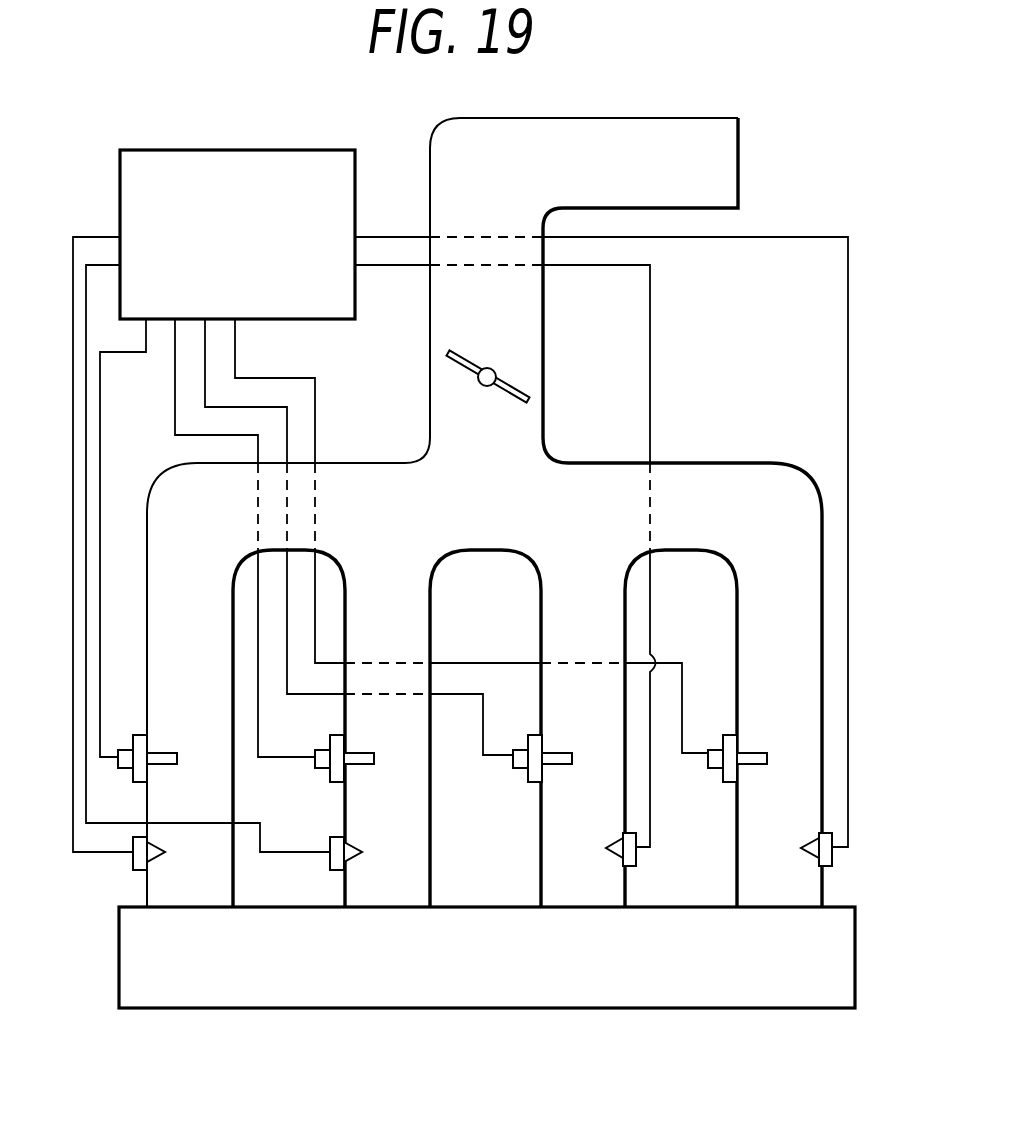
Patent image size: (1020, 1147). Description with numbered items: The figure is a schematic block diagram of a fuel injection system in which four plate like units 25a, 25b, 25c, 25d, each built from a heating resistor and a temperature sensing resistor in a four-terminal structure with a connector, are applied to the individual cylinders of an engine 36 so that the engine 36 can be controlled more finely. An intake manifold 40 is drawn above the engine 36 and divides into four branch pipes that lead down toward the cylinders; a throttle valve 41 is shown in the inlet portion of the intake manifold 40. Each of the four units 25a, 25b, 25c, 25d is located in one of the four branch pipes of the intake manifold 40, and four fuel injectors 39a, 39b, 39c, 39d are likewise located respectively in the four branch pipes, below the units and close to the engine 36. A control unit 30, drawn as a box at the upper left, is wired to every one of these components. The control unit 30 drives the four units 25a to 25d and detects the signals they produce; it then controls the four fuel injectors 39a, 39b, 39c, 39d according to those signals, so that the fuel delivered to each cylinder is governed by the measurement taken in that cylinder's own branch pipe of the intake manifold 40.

The control unit 30 is at (288, 152).
The intake manifold 40 is at (702, 472).
The throttle valve 41 is at (493, 374).
The engine 36 is at (652, 992).
The unit 25a is at (732, 738).
The unit 25b is at (533, 767).
The unit 25c is at (335, 767).
The unit 25d is at (142, 745).
The fuel injector 39a is at (833, 860).
The fuel injector 39b is at (637, 860).
The fuel injector 39c is at (330, 862).
The fuel injector 39d is at (135, 858).